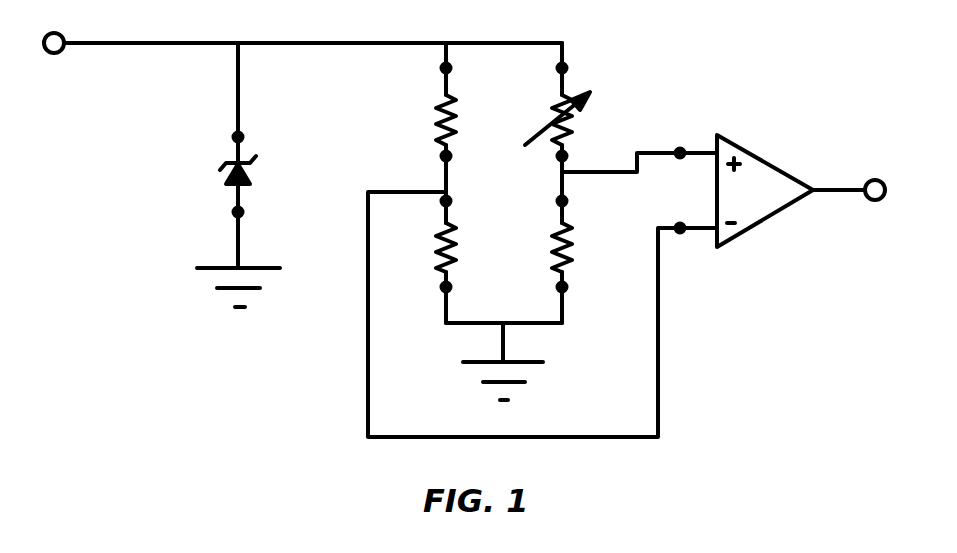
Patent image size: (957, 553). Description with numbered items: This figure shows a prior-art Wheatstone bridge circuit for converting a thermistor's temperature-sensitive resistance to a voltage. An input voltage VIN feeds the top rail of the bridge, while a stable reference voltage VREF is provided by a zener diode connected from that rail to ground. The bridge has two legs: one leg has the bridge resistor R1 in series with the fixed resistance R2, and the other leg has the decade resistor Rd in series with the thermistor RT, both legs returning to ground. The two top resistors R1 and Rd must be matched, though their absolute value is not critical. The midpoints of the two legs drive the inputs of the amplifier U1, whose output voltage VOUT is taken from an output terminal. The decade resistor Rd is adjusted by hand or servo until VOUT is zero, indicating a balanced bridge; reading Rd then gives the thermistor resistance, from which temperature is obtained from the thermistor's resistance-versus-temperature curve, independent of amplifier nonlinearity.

The input voltage VIN is at (75, 26).
The stable reference voltage VREF is at (206, 175).
The bridge resistor R1 is at (425, 118).
The fixed resistance R2 is at (422, 258).
The decade resistor Rd is at (569, 118).
The thermistor RT is at (582, 258).
The amplifier U1 is at (765, 191).
The output voltage VOUT is at (844, 167).